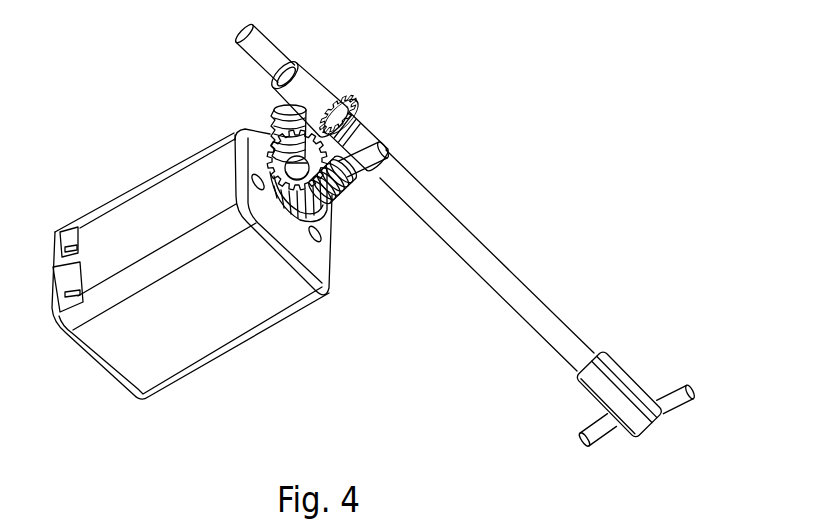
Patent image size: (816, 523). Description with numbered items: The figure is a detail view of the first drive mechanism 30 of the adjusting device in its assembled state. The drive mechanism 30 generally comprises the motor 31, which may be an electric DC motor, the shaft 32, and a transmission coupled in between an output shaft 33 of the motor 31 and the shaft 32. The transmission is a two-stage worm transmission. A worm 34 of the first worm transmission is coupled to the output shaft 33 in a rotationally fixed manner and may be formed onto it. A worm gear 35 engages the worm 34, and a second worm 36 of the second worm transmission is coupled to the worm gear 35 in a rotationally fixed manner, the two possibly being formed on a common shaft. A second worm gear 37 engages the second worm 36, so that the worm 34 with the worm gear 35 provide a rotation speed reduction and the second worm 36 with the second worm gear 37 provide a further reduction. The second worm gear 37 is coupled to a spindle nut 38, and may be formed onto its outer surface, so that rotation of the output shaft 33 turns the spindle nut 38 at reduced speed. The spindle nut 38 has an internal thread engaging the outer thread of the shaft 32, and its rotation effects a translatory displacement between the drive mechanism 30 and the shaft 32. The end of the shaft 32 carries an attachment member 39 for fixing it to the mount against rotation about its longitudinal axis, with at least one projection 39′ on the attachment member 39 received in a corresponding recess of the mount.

The first drive mechanism 30 is at (609, 90).
The motor 31 is at (92, 357).
The shaft 32 is at (507, 274).
The output shaft 33 is at (368, 173).
The worm 34 is at (333, 205).
The worm gear 35 is at (273, 153).
The second worm 36 is at (282, 118).
The second worm gear 37 is at (358, 98).
The spindle nut 38 is at (385, 135).
The attachment member 39 is at (623, 370).
The projection 39′ is at (683, 375).